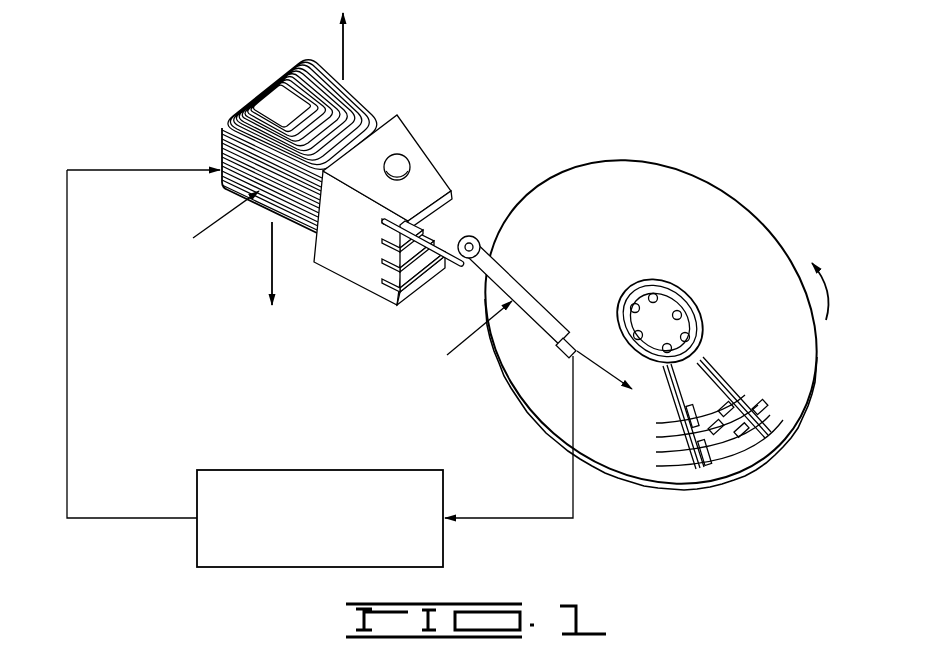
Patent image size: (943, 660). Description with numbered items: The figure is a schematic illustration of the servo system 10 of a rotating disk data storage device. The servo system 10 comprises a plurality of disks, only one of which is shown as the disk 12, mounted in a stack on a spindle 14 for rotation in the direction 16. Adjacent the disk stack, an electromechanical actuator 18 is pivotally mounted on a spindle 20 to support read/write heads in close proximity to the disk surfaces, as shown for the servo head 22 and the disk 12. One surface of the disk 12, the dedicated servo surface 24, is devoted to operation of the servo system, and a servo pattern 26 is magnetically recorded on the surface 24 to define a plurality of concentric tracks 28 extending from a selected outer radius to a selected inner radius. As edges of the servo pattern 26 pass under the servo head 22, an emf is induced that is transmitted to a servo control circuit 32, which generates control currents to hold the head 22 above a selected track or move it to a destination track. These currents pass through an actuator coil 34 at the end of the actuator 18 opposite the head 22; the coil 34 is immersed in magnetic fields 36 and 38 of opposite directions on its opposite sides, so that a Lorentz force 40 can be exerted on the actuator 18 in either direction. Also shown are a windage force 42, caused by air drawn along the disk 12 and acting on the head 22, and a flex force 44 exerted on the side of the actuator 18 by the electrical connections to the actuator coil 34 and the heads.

The servo system 10 is at (557, 91).
The disk 12 is at (701, 192).
The spindle 14 is at (672, 293).
The direction of rotation 16 is at (823, 292).
The electromechanical actuator 18 is at (428, 151).
The spindle 20 is at (397, 163).
The servo head 22 is at (557, 349).
The dedicated servo surface 24 is at (654, 245).
The servo pattern 26 is at (714, 479).
The concentric tracks 28 is at (783, 420).
The servo control circuit 32 is at (305, 470).
The actuator coil 34 is at (294, 63).
The magnetic field 36 is at (345, 60).
The magnetic field 38 is at (270, 278).
The Lorentz force 40 is at (213, 222).
The windage force 42 is at (590, 362).
The flex force 44 is at (466, 337).